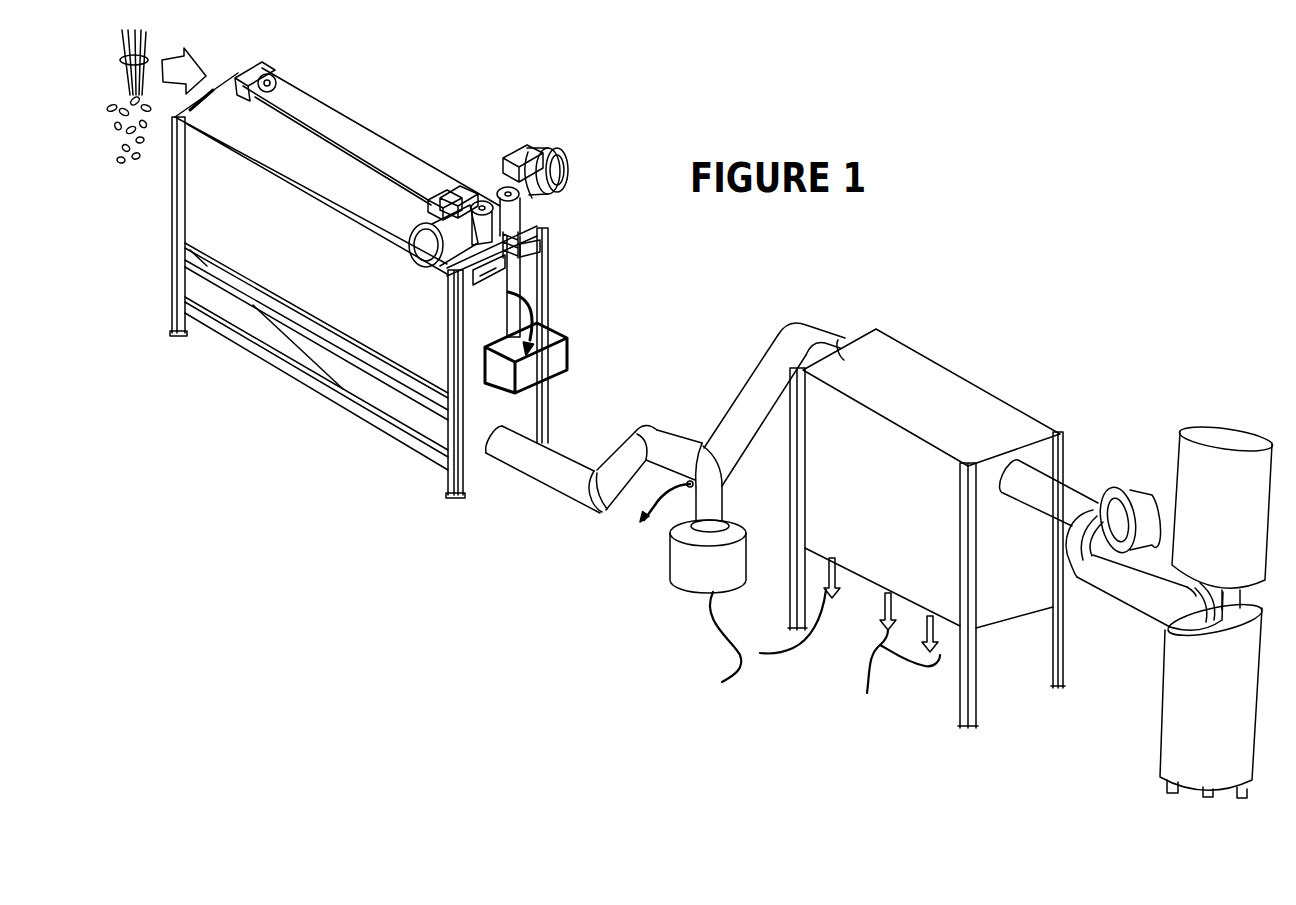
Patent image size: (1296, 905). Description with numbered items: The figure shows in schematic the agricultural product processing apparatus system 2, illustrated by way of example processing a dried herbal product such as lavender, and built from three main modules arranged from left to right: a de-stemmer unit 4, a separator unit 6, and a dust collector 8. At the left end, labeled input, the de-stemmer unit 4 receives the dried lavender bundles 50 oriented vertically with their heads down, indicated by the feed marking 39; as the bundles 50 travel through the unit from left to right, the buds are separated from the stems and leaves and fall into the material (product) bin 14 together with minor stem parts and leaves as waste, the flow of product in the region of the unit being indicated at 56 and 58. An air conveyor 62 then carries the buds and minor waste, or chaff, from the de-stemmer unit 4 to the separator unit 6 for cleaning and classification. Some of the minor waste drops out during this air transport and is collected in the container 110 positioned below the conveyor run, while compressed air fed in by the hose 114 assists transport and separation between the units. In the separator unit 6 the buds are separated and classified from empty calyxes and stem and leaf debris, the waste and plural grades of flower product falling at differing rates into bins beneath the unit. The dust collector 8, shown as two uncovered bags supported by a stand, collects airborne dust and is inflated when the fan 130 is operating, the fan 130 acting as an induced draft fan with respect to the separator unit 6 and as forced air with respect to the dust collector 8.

The agricultural product processing apparatus system 2 is at (598, 230).
The de-stemmer unit 4 is at (383, 103).
The separator unit 6 is at (893, 320).
The dust collector 8 is at (1148, 436).
The material (product) bin 14 is at (417, 422).
The direction of feed 39 is at (168, 38).
The dried lavender bundles 50 is at (130, 75).
The product flow 56 is at (528, 297).
The collection box 58 is at (568, 357).
The air conveyor 62 is at (556, 490).
The container 110 is at (688, 572).
The hose 114 is at (641, 522).
The fan 130 is at (1109, 468).